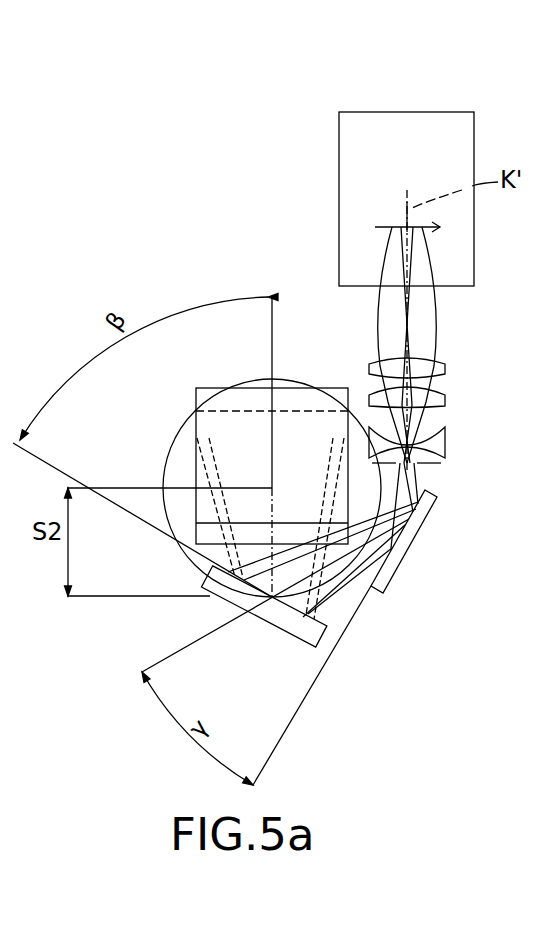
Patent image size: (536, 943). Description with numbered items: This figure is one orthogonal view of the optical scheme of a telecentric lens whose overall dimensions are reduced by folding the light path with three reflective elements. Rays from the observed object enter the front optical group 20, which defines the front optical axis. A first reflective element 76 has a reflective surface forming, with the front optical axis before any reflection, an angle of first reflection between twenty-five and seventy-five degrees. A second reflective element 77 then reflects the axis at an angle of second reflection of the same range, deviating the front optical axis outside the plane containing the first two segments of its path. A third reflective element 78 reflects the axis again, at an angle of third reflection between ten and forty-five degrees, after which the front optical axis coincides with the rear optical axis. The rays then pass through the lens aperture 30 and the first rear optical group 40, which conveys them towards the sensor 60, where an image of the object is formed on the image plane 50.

The sensor 60 is at (433, 108).
The image plane 50 is at (380, 226).
The first rear optical group 40 is at (453, 442).
The lens aperture 30 is at (437, 465).
The front optical group 20 is at (293, 382).
The first reflective element 76 is at (196, 393).
The second reflective element 77 is at (212, 599).
The third reflective element 78 is at (395, 572).